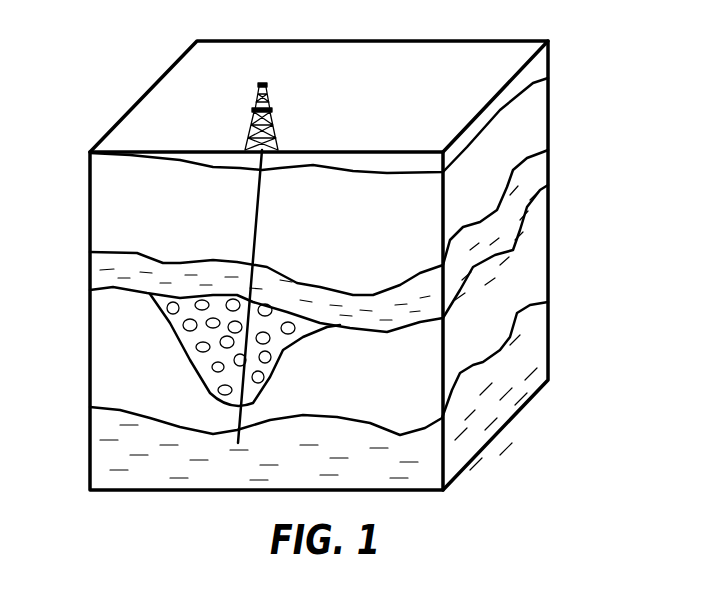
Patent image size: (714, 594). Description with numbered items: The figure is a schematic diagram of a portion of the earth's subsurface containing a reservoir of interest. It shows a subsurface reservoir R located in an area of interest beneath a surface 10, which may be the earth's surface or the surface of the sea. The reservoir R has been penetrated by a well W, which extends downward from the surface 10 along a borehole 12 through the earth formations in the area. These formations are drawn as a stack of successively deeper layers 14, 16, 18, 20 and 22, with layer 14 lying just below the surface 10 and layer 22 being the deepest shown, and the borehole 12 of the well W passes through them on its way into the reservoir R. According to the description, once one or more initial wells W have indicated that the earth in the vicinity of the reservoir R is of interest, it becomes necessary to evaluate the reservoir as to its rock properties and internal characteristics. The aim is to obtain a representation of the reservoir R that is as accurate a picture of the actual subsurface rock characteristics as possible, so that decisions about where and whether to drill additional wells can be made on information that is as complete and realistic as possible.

The surface 10 is at (457, 52).
The borehole 12 is at (213, 383).
The earth formation layer 14 is at (538, 123).
The earth formation layer 16 is at (538, 170).
The earth formation layer 18 is at (190, 337).
The earth formation layer 20 is at (540, 258).
The earth formation layer 22 is at (538, 350).
The well W is at (291, 116).
The subsurface reservoir R is at (609, 32).